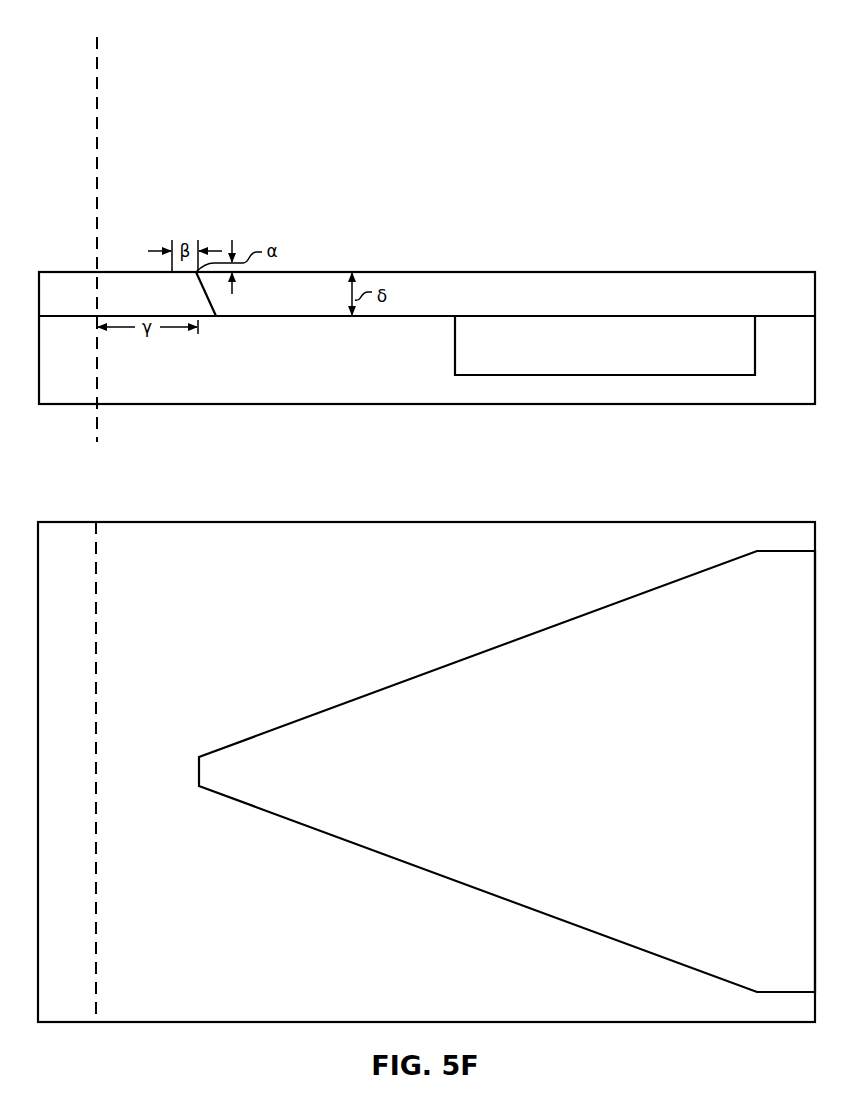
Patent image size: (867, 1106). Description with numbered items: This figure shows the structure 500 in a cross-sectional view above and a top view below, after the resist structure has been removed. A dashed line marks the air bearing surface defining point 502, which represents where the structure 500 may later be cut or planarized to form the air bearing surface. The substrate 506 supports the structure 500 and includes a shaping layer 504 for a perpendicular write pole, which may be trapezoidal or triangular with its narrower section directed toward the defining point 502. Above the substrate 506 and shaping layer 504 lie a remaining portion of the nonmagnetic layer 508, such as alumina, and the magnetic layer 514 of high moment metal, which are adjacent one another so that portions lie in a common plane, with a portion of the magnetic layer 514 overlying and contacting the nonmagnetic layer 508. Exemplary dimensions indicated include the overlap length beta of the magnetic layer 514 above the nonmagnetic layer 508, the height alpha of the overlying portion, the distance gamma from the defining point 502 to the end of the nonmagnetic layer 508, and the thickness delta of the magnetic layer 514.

The structure 500 is at (448, 255).
The air bearing surface (ABS) defining point 502 is at (97, 432).
The shaping layer 504 is at (589, 357).
The substrate 506 is at (321, 370).
The nonmagnetic layer 508 is at (111, 303).
The magnetic layer 514 is at (500, 303).